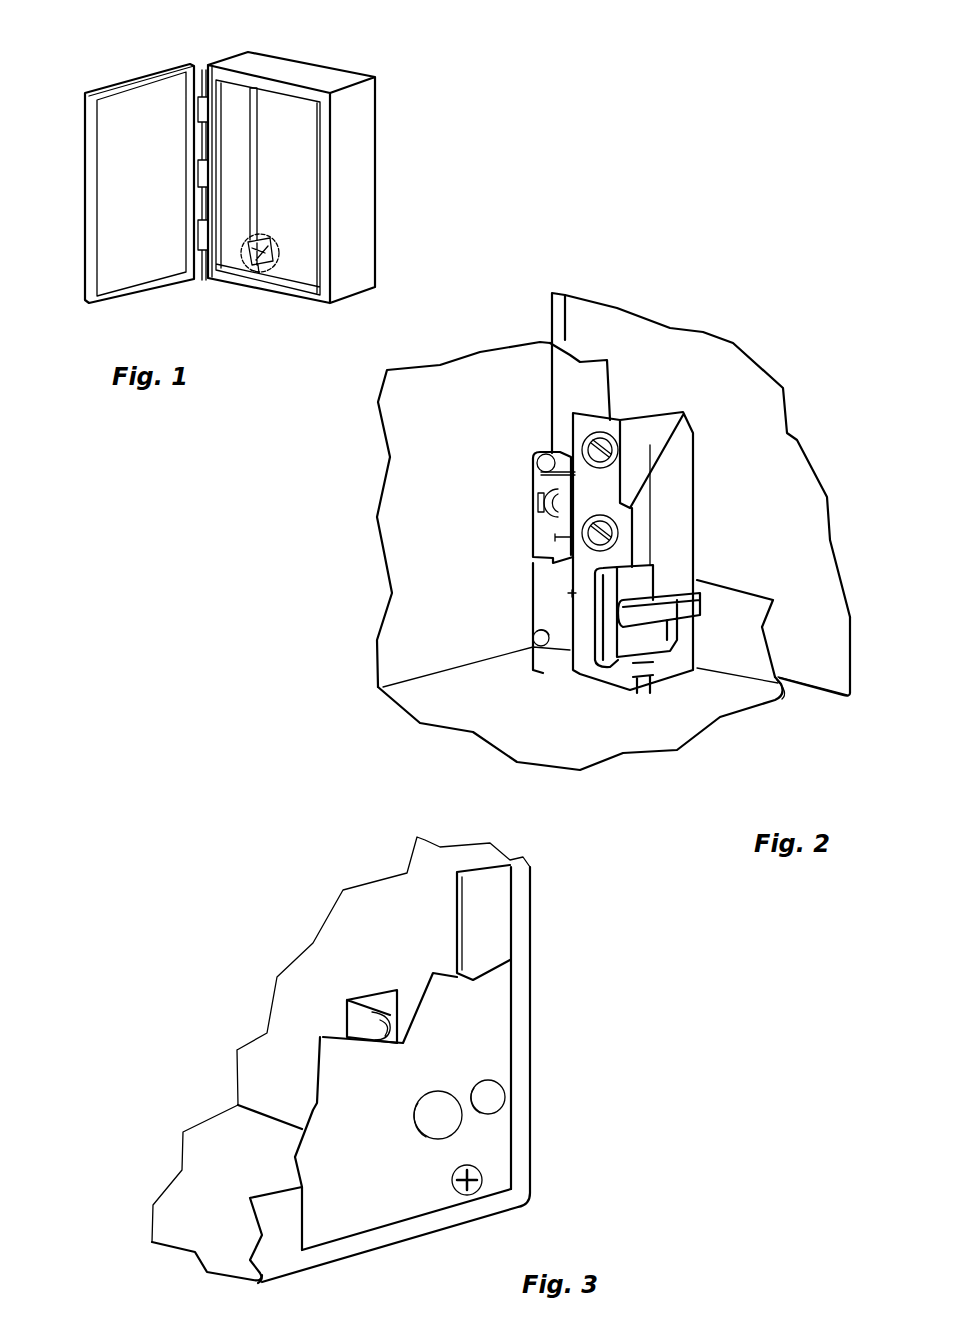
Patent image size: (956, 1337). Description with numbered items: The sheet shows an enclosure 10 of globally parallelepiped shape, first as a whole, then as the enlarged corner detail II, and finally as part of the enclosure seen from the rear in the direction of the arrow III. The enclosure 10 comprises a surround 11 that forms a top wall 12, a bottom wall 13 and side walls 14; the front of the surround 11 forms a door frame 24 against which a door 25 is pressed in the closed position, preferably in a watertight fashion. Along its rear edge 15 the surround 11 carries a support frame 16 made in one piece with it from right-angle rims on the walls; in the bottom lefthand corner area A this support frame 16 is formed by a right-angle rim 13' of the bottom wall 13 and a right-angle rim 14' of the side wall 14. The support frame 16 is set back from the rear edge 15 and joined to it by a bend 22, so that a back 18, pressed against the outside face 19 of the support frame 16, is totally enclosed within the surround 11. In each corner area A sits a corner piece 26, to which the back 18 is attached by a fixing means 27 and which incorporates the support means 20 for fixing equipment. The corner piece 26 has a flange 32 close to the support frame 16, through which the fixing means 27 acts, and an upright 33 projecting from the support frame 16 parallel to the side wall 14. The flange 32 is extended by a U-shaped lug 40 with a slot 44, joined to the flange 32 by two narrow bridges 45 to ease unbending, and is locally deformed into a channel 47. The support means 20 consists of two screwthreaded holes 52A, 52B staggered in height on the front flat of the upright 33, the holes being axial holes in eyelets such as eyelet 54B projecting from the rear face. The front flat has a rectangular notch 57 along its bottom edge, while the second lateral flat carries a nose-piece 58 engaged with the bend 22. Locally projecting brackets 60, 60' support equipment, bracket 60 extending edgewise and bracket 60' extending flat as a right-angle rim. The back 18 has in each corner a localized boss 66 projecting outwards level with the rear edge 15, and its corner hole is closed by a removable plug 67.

In FIG. 1, the enclosure 10 is at (446, 141).
In FIG. 2, the enclosure 10 is at (322, 483).
In FIG. 3, the enclosure 10 is at (573, 962).
In FIG. 1, the surround 11 is at (368, 300).
In FIG. 2, the surround 11 is at (373, 682).
In FIG. 3, the surround 11 is at (215, 1287).
In FIG. 1, the top wall 12 is at (322, 77).
In FIG. 1, the bottom wall 13 is at (292, 234).
In FIG. 2, the bottom wall 13 is at (612, 729).
In FIG. 3, the bottom wall 13 is at (171, 1256).
In FIG. 2, the right-angle rim 13' is at (794, 638).
In FIG. 3, the right-angle rim 13' is at (294, 1253).
In FIG. 1, the side wall 14 is at (348, 164).
In FIG. 2, the side wall 14 is at (418, 514).
In FIG. 3, the side wall 14 is at (341, 1043).
In FIG. 2, the right-angle rim 14' is at (549, 361).
In FIG. 3, the right-angle rim 14' is at (519, 904).
In FIG. 3, the rear edge 15 is at (535, 1122).
In FIG. 1, the support frame 16 is at (261, 156).
In FIG. 2, the support frame 16 is at (618, 386).
In FIG. 3, the support frame 16 is at (264, 1189).
In FIG. 1, the back 18 is at (296, 173).
In FIG. 2, the back 18 is at (802, 383).
In FIG. 3, the back 18 is at (520, 1018).
In FIG. 2, the outside face 19 is at (580, 345).
In FIG. 2, the support means 20 is at (555, 540).
In FIG. 2, the bend 22 is at (789, 697).
In FIG. 3, the bend 22 is at (316, 1262).
In FIG. 1, the door frame 24 is at (221, 119).
In FIG. 1, the door 25 is at (90, 306).
In FIG. 1, the corner piece 26 is at (267, 277).
In FIG. 2, the corner piece 26 is at (556, 672).
In FIG. 3, the corner piece 26 is at (340, 1013).
In FIG. 3, the fixing means 27 is at (482, 1196).
In FIG. 2, the flange 32 is at (590, 565).
In FIG. 2, the upright 33 is at (706, 492).
In FIG. 3, the upright 33 is at (347, 1000).
In FIG. 2, the U-shaped lug 40 is at (531, 530).
In FIG. 2, the slot 44 is at (540, 505).
In FIG. 2, the bridges 45 is at (541, 466).
In FIG. 2, the channel 47 is at (530, 646).
In FIG. 2, the screwthreaded hole 52A is at (537, 482).
In FIG. 2, the screwthreaded hole 52B is at (545, 456).
In FIG. 3, the eyelet 54B is at (403, 1013).
In FIG. 2, the notch 57 is at (600, 679).
In FIG. 2, the nose-piece 58 is at (703, 677).
In FIG. 2, the bracket 60 is at (391, 587).
In FIG. 2, the bracket 60' is at (743, 616).
In FIG. 3, the boss 66 is at (438, 1130).
In FIG. 3, the removable plug 67 is at (490, 1098).
In FIG. 1, the corner area A is at (233, 252).
In FIG. 2, the corner area A is at (418, 683).
In FIG. 1, the detail II is at (282, 251).
In FIG. 2, the arrow III is at (840, 492).